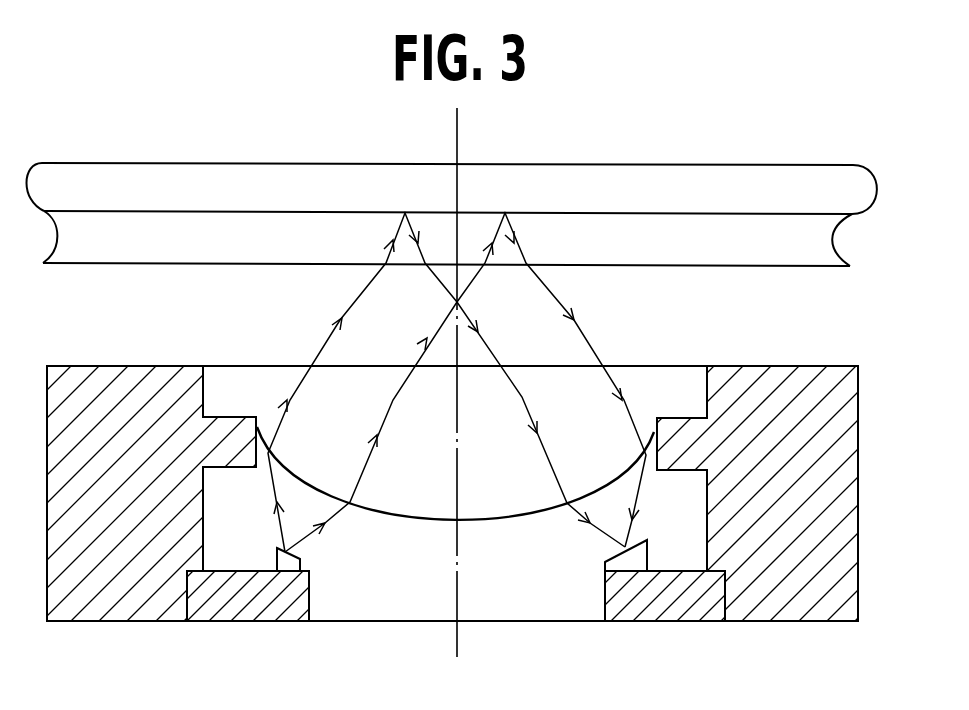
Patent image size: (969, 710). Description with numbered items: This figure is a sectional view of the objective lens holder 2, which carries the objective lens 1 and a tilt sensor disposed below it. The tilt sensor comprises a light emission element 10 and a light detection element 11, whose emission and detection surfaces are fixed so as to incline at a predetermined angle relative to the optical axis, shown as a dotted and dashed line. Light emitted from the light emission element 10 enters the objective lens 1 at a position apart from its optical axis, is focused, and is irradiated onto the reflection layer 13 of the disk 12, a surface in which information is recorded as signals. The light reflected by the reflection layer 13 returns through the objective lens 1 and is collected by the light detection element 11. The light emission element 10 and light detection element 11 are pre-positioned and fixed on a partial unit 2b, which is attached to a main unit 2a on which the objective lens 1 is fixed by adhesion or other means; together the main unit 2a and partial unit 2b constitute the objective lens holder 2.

The objective lens 1 is at (661, 388).
The objective lens holder 2 is at (860, 458).
The main unit 2a is at (845, 568).
The partial unit 2b is at (702, 607).
The light emission element 10 is at (290, 571).
The light detection element 11 is at (631, 571).
The disk 12 is at (689, 185).
The reflection layer 13 is at (783, 214).